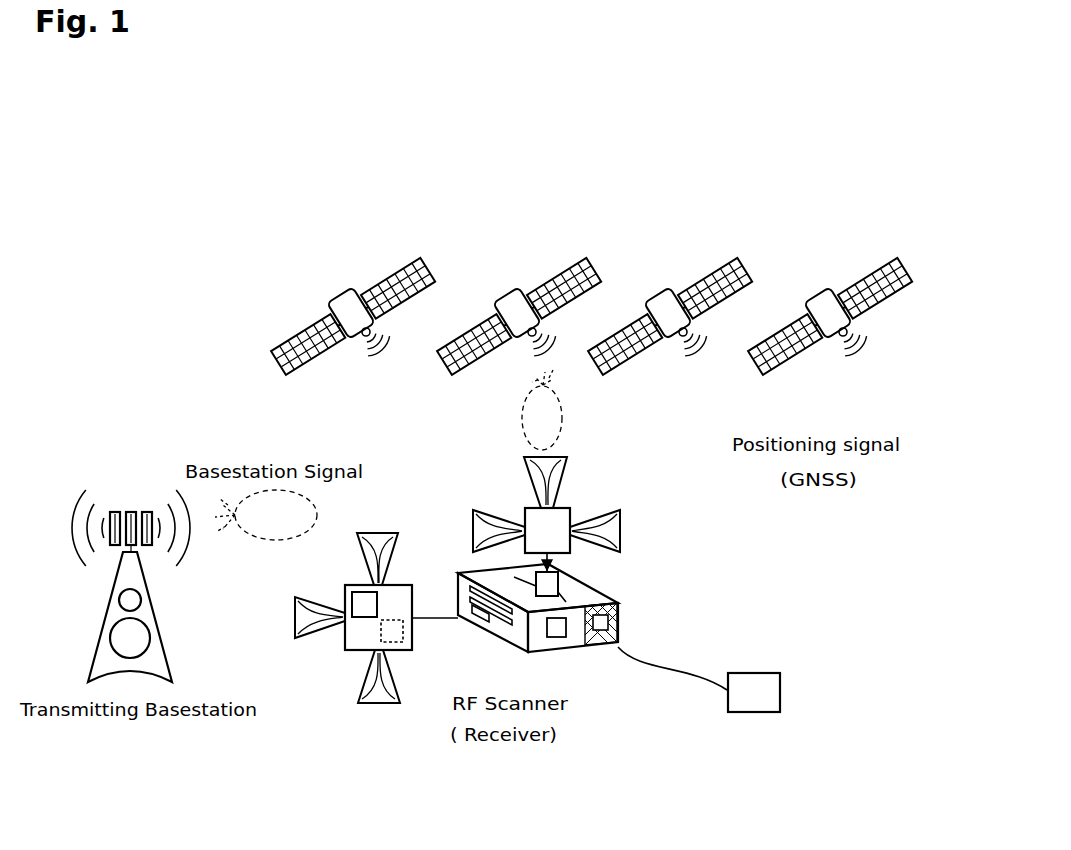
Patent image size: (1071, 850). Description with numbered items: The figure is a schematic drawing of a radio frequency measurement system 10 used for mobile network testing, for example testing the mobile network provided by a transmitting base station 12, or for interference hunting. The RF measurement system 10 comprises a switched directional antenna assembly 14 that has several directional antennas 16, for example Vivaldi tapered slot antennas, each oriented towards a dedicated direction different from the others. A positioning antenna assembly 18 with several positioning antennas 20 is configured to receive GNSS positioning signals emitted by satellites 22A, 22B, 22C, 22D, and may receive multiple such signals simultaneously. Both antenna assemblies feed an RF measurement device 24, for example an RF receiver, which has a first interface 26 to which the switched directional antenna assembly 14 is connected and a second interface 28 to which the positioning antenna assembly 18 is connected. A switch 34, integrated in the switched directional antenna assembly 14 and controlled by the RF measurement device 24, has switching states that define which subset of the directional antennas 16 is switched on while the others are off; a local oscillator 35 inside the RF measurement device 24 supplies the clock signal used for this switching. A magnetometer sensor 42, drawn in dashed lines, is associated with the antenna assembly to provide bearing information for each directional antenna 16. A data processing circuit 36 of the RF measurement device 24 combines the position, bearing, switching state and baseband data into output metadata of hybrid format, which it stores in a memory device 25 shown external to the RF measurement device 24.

The RF measurement system 10 is at (730, 160).
The base station 12 is at (101, 622).
The switched directional antenna assembly 14 is at (355, 652).
The directional antenna 16 is at (379, 534).
The positioning antenna assembly 18 is at (565, 505).
The positioning antenna 20 is at (489, 513).
The satellite 22A is at (334, 291).
The satellite 22B is at (500, 291).
The satellite 22C is at (651, 291).
The satellite 22D is at (811, 291).
The RF measurement device 24 is at (620, 616).
The memory device 25 is at (745, 673).
The first interface 26 is at (490, 622).
The second interface 28 is at (560, 585).
The switch 34 is at (358, 590).
The local oscillator 35 is at (562, 635).
The data processing circuit 36 is at (620, 622).
The magnetometer sensor 42 is at (391, 618).